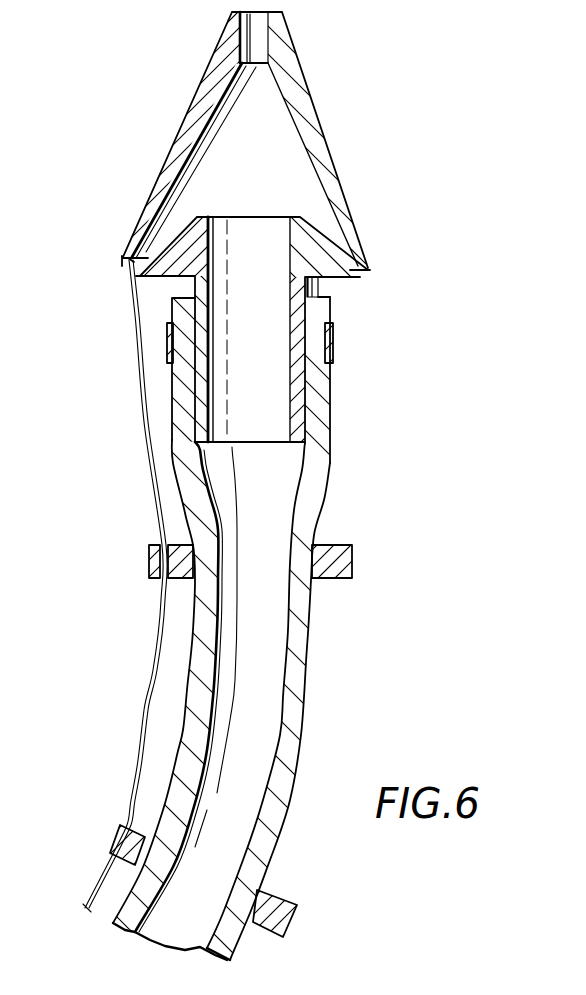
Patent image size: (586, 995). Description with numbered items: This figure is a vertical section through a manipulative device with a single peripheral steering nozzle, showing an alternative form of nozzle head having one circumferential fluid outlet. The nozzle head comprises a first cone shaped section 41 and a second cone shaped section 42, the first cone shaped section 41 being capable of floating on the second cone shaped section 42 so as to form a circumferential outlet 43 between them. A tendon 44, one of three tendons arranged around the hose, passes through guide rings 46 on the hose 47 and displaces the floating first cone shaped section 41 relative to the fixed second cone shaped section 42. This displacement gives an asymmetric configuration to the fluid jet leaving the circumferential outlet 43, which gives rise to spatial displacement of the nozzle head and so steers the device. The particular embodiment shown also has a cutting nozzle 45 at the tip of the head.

The first cone shaped section 41 is at (188, 127).
The second cone shaped section 42 is at (317, 258).
The circumferential outlet 43 is at (128, 268).
The tendon 44 is at (143, 383).
The cutting nozzle 45 is at (265, 40).
The guide rings 46 is at (155, 558).
The hose 47 is at (313, 487).